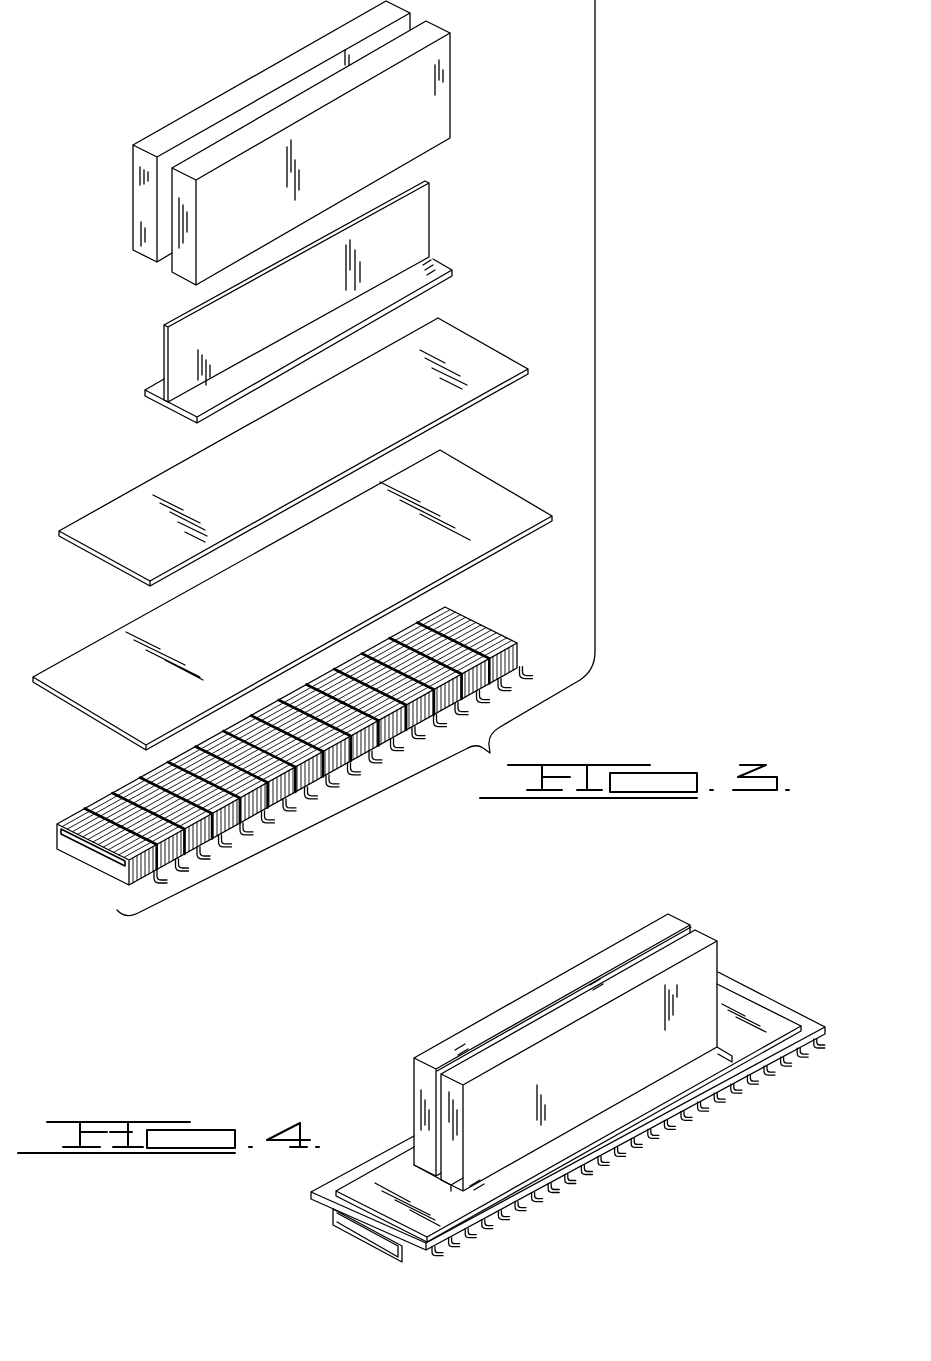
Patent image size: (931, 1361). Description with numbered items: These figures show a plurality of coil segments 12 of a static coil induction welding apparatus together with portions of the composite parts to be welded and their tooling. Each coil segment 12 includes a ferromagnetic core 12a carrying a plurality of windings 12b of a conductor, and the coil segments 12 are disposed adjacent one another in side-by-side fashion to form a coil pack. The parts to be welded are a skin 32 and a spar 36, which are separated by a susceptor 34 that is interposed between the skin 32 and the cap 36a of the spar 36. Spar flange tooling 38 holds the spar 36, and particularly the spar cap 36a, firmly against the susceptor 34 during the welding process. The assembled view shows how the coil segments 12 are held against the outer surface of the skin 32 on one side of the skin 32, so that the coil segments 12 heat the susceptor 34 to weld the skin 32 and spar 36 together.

In FIG. 3, the coil segment 12 is at (278, 790).
In FIG. 4, the coil segment 12 is at (340, 1233).
In FIG. 3, the ferromagnetic core 12a is at (82, 852).
In FIG. 3, the windings 12b is at (140, 889).
In FIG. 3, the skin 32 is at (292, 611).
In FIG. 4, the skin 32 is at (811, 1031).
In FIG. 3, the susceptor 34 is at (298, 467).
In FIG. 4, the susceptor 34 is at (748, 1007).
In FIG. 3, the spar 36 is at (286, 305).
In FIG. 4, the spar 36 is at (539, 1094).
In FIG. 3, the spar cap 36a is at (160, 400).
In FIG. 4, the spar cap 36a is at (455, 1186).
In FIG. 3, the spar flange tooling 38 is at (180, 235).
In FIG. 4, the spar flange tooling 38 is at (489, 1058).